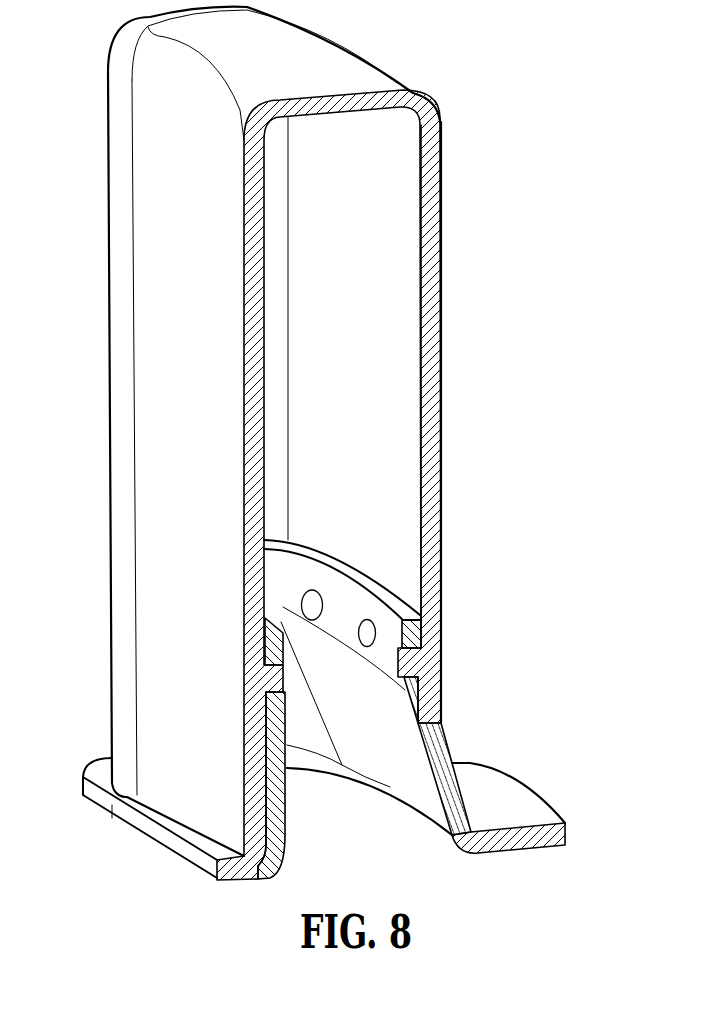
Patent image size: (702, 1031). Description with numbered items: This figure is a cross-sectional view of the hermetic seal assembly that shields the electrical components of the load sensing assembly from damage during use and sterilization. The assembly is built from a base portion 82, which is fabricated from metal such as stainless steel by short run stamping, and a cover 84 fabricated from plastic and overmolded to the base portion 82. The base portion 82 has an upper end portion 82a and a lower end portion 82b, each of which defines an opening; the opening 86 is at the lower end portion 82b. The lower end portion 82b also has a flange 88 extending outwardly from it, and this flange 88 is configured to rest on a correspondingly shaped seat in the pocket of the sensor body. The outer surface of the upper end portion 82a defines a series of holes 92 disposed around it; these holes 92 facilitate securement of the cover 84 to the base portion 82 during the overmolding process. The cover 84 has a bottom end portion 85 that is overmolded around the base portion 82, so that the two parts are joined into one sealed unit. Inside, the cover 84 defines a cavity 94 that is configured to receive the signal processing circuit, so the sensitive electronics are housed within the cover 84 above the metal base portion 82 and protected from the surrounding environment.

The base portion 82 is at (545, 331).
The upper end portion 82a is at (393, 626).
The lower end portion 82b is at (418, 787).
The cover 84 is at (432, 313).
The bottom end portion 85 is at (123, 748).
The opening 86 is at (440, 845).
The flange 88 is at (545, 820).
The holes 92 is at (312, 605).
The cavity 94 is at (400, 483).